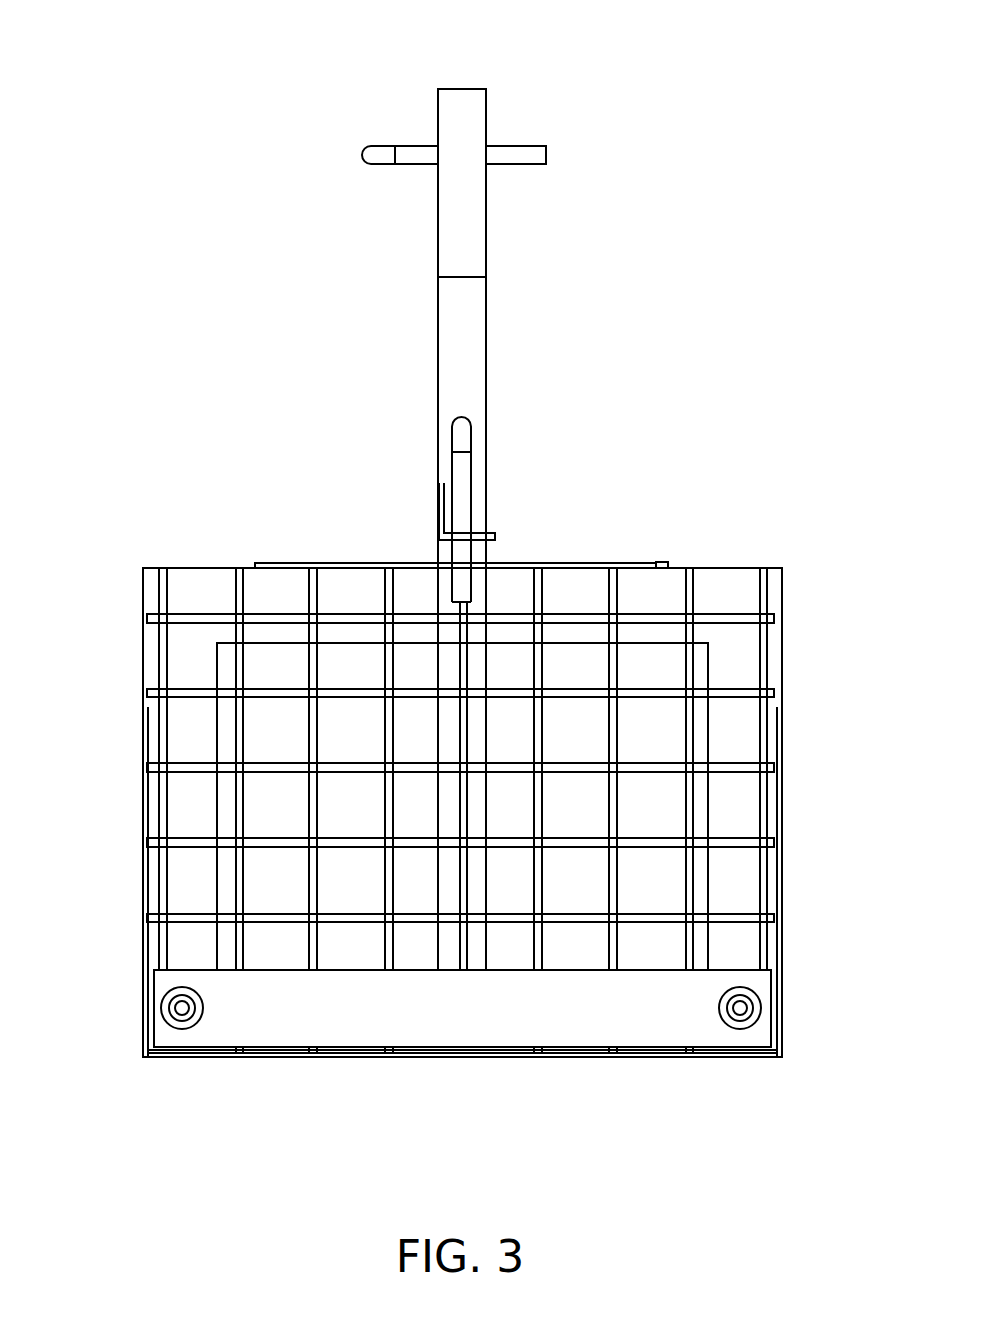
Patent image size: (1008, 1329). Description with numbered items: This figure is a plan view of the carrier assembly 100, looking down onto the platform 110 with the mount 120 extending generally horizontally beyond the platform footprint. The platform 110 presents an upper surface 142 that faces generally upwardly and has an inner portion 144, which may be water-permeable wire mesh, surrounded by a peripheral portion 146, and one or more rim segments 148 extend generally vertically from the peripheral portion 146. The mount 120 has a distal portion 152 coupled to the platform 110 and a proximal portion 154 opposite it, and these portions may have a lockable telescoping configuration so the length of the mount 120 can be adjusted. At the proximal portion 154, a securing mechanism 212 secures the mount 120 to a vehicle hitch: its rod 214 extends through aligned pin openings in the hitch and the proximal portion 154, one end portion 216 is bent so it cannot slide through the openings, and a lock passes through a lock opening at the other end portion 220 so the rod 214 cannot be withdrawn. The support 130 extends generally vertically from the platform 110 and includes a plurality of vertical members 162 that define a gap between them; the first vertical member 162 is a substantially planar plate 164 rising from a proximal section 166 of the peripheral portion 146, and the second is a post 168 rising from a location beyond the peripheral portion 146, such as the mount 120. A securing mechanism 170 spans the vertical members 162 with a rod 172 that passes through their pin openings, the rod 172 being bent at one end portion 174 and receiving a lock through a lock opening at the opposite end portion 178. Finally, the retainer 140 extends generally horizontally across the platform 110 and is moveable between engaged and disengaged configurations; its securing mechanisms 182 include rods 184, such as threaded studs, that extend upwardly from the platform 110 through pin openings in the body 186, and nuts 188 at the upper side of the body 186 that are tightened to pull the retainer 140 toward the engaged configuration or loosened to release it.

The carrier assembly 100 is at (427, 890).
The platform 110 is at (158, 660).
The mount 120 is at (436, 490).
The support 130 is at (458, 761).
The retainer 140 is at (462, 1046).
The first surface 142 is at (737, 687).
The inner portion 144 is at (468, 784).
The peripheral portion 146 is at (742, 566).
The rim segments 148 is at (147, 805).
The distal portion 152 is at (473, 529).
The proximal portion 154 is at (502, 218).
The vertical members 162 is at (521, 509).
The planar plate 164 is at (633, 561).
The proximal section 166 is at (222, 544).
The post 168 is at (494, 532).
The securing mechanism 170 is at (457, 491).
The rod 172 is at (452, 462).
The end portion 174 is at (466, 436).
The end portion 178 is at (460, 600).
The securing mechanisms 182 is at (455, 1032).
The rods 184 is at (461, 1049).
The body 186 is at (446, 1015).
The nuts 188 is at (182, 1020).
The securing mechanism 212 is at (436, 163).
The rod 214 is at (366, 166).
The end portion 216 is at (358, 160).
The end portion 220 is at (539, 138).